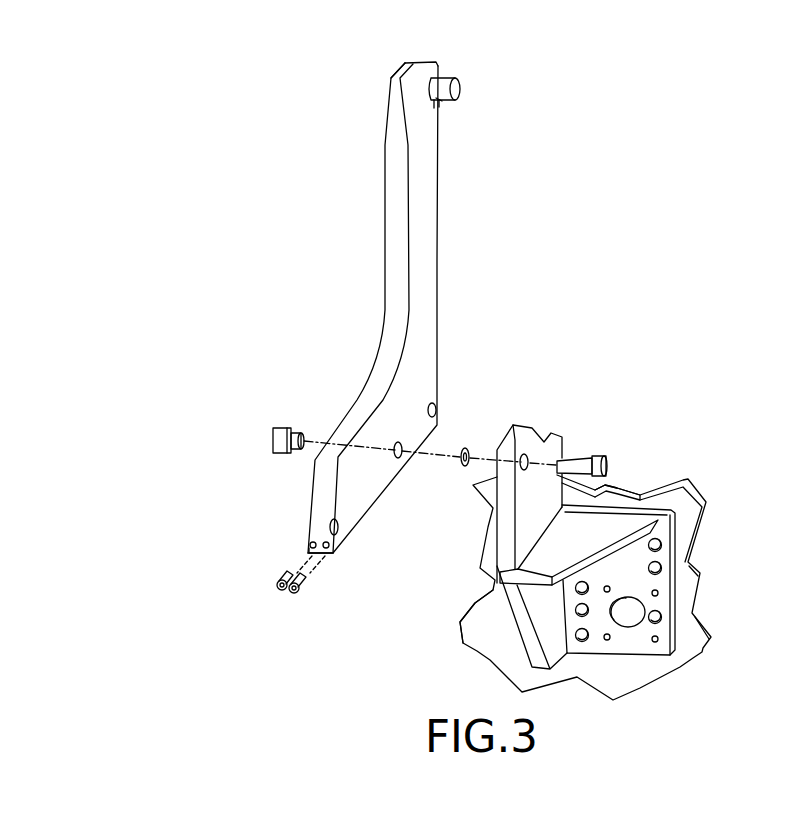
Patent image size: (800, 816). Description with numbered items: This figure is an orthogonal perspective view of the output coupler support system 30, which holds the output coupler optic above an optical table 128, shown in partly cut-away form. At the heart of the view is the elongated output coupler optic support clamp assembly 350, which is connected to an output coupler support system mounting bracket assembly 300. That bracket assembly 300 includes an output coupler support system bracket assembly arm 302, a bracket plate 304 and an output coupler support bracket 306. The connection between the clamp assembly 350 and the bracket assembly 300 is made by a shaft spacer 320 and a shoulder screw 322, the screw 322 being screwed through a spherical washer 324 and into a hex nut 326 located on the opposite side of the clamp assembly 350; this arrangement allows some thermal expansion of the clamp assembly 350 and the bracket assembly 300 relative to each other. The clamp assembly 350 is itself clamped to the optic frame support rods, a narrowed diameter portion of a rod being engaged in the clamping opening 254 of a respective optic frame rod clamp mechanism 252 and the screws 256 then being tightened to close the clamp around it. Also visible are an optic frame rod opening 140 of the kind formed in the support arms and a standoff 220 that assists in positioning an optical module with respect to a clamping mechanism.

The output coupler support system 30 is at (716, 542).
The optical table 128 is at (468, 614).
The optic frame rod opening 140 is at (446, 406).
The standoff 220 is at (452, 77).
The optic frame rod clamp mechanism 252 is at (404, 63).
The optic frame rod clamp opening 254 is at (461, 99).
The screw 256 is at (277, 588).
The output coupler support system mounting bracket assembly 300 is at (523, 610).
The output coupler support system bracket assembly arm 302 is at (493, 558).
The bracket plate 304 is at (692, 657).
The output coupler support bracket 306 is at (620, 527).
The shaft spacer 320 is at (466, 452).
The shoulder screw 322 is at (584, 455).
The spherical washer 324 is at (403, 476).
The hex nut 326 is at (280, 432).
The output coupler optic support clamp assembly 350 is at (423, 263).